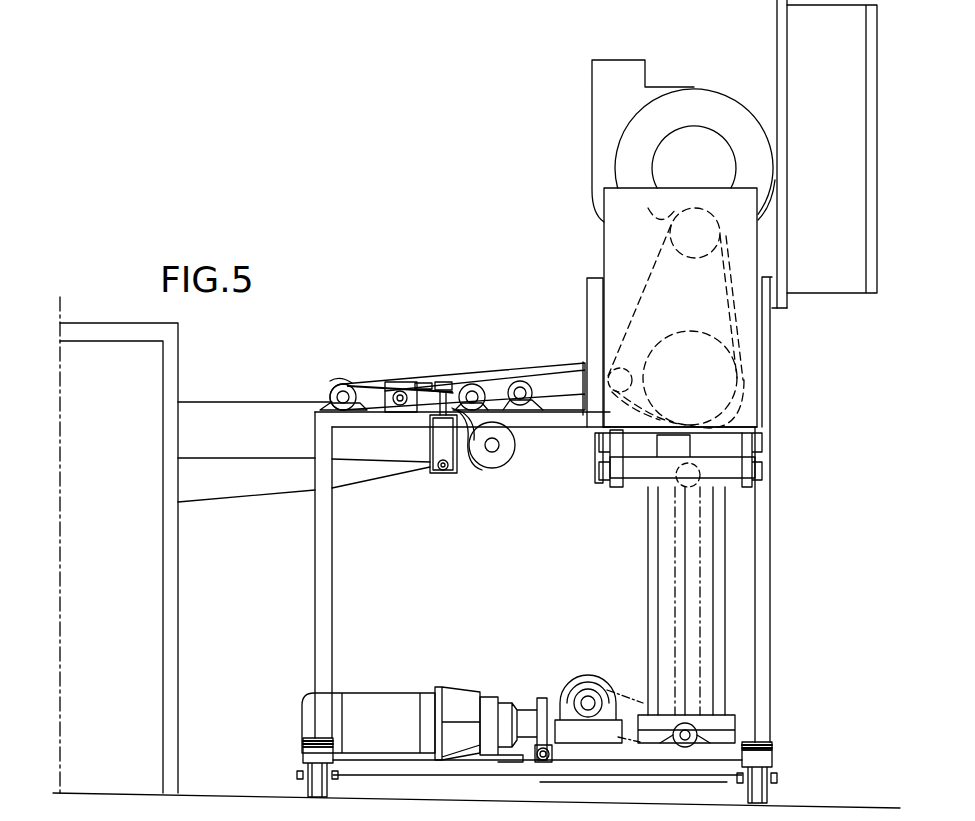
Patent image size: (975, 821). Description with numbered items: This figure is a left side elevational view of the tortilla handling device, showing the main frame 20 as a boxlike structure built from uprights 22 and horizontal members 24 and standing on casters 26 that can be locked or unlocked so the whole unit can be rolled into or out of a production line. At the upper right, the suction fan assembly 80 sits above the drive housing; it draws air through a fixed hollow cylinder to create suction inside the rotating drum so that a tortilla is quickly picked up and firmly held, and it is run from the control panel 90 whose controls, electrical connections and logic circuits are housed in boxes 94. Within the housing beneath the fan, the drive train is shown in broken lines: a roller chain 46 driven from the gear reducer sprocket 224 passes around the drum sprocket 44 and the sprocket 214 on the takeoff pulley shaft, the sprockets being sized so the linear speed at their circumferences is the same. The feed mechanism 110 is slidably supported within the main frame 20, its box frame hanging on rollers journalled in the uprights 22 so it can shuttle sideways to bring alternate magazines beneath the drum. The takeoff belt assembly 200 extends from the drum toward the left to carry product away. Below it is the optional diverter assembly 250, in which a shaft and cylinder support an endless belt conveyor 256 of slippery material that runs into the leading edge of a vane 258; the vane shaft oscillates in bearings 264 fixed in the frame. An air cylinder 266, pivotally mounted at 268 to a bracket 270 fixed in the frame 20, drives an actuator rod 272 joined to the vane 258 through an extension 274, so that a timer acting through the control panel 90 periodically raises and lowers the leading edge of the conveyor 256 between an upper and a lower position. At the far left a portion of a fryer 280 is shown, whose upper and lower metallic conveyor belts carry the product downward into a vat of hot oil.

The main frame 20 is at (765, 535).
The uprights 22 is at (327, 592).
The horizontal members 24 is at (562, 428).
The casters 26 is at (300, 778).
The sprocket 44 is at (698, 331).
The roller chain 46 is at (643, 285).
The suction fan assembly 80 is at (700, 92).
The control panel 90 is at (777, 9).
The boxes 94 is at (831, 293).
The feed mechanism 110 is at (648, 566).
The takeoff belt assembly 200 is at (556, 362).
The sprocket 214 is at (646, 338).
The sprocket 224 is at (680, 307).
The diverter assembly 250 is at (405, 334).
The endless belt conveyor 256 is at (365, 387).
The vane 258 is at (427, 383).
The bearings 264 is at (393, 385).
The air cylinder 266 is at (436, 438).
The pivot mounting 268 is at (443, 471).
The bracket 270 is at (428, 463).
The actuator rod 272 is at (470, 432).
The extension 274 is at (450, 383).
The fryer 280 is at (173, 563).